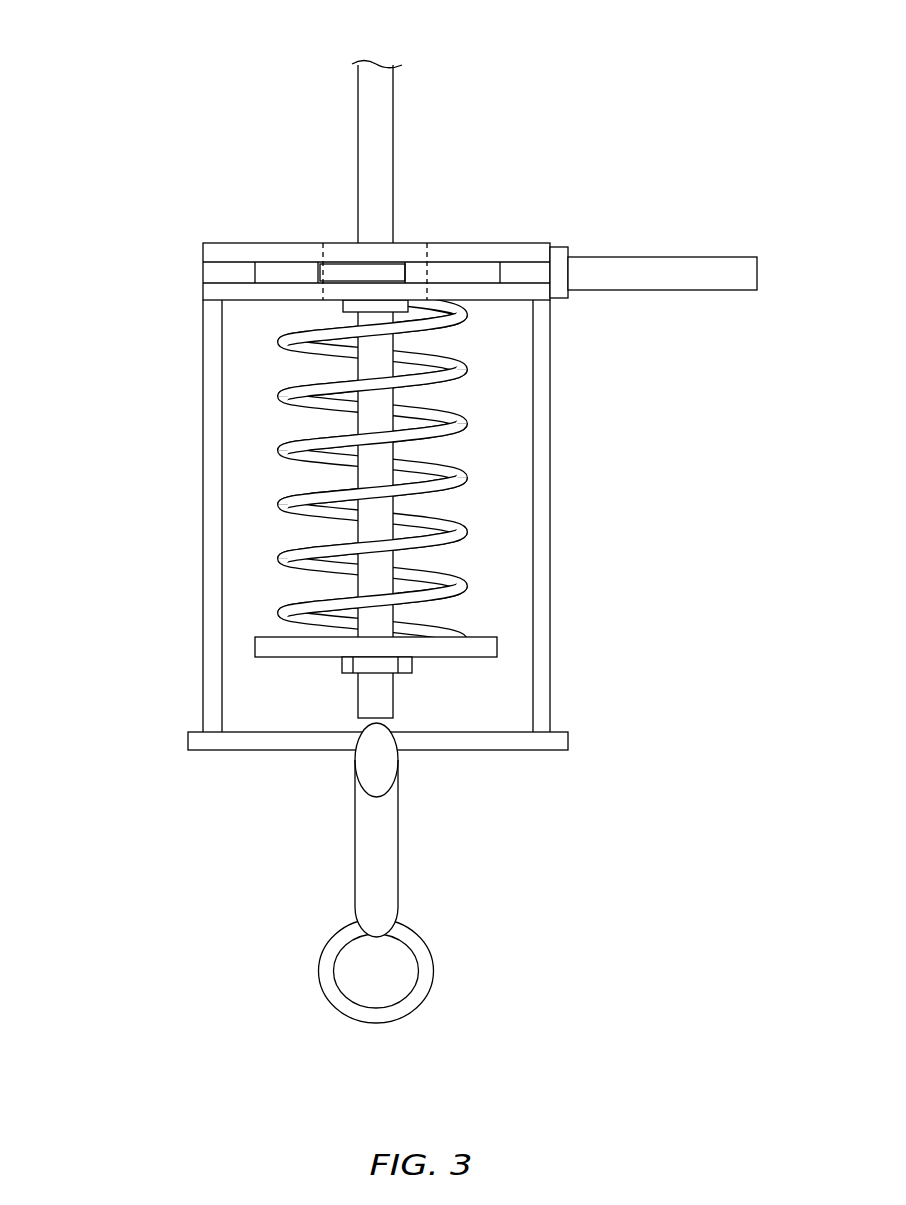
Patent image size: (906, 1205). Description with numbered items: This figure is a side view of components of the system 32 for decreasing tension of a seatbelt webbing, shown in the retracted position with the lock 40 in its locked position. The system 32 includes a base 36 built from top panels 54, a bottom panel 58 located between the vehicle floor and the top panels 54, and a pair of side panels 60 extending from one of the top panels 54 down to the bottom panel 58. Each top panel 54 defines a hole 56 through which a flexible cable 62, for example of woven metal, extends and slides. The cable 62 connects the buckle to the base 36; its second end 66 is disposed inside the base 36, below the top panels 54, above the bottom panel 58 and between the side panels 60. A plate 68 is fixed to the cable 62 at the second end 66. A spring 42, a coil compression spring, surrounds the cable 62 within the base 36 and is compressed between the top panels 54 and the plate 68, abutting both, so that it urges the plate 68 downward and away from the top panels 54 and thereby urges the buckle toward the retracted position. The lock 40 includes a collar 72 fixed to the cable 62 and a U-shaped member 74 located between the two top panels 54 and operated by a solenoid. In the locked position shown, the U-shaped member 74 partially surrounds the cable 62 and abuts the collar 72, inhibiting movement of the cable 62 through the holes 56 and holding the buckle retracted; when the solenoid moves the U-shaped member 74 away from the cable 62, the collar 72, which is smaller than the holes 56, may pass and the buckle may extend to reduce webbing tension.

The system 32 is at (408, 542).
The base 36 is at (350, 498).
The lock 40 is at (677, 268).
The spring 42 is at (452, 390).
The top panel 54 is at (528, 243).
The hole 56 is at (322, 297).
The bottom panel 58 is at (510, 752).
The side panel 60 is at (203, 525).
The cable 62 is at (380, 120).
The second end 66 is at (380, 692).
The plate 68 is at (285, 657).
The collar 72 is at (377, 305).
The U-shaped member 74 is at (400, 272).